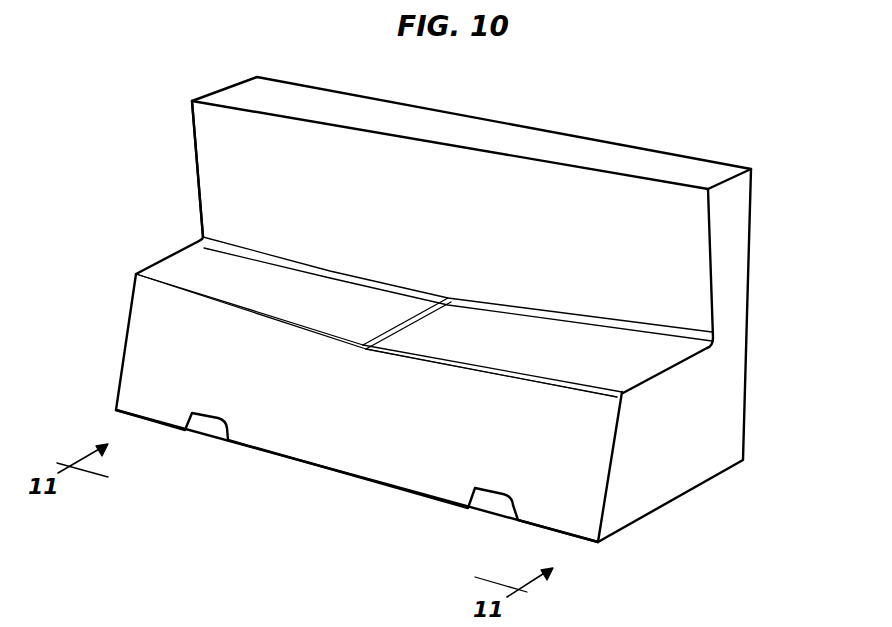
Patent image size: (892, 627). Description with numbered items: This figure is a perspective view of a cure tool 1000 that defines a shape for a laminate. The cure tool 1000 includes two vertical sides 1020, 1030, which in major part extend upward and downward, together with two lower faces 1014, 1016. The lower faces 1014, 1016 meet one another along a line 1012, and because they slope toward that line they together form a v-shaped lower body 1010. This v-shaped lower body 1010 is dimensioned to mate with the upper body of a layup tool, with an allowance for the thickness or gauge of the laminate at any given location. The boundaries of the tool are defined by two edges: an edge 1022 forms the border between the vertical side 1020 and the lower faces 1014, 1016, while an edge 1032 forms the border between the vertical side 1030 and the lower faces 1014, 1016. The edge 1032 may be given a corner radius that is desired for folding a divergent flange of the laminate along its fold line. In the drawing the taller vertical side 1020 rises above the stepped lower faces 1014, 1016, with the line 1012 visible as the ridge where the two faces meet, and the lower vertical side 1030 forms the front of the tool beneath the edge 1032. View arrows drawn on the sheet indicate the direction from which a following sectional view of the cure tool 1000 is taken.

The cure tool 1000 is at (130, 67).
The v-shaped lower body 1010 is at (720, 307).
The line 1012 is at (388, 330).
The lower face 1014 is at (184, 275).
The lower face 1016 is at (648, 353).
The vertical side 1020 is at (643, 243).
The edge 1022 is at (494, 306).
The vertical side 1030 is at (433, 473).
The edge 1032 is at (552, 375).